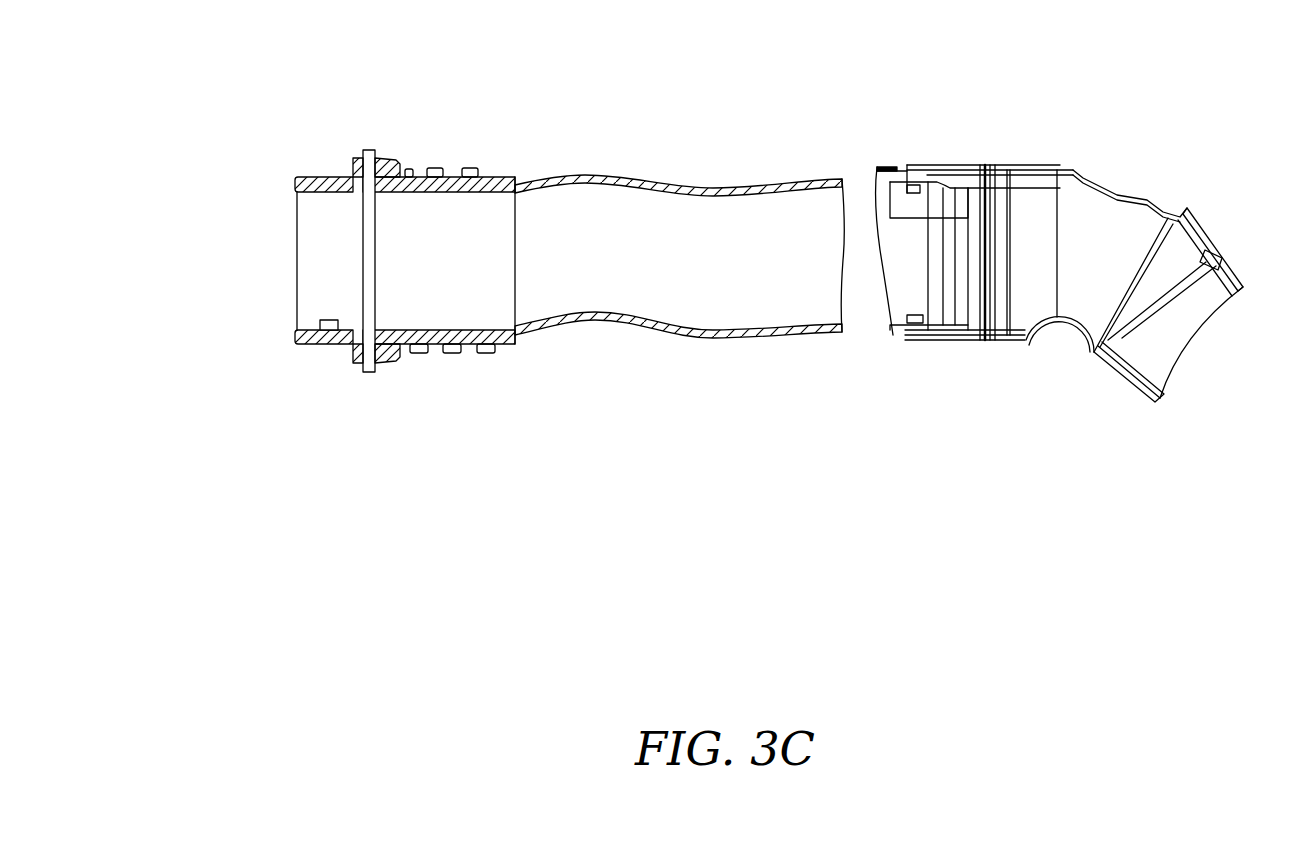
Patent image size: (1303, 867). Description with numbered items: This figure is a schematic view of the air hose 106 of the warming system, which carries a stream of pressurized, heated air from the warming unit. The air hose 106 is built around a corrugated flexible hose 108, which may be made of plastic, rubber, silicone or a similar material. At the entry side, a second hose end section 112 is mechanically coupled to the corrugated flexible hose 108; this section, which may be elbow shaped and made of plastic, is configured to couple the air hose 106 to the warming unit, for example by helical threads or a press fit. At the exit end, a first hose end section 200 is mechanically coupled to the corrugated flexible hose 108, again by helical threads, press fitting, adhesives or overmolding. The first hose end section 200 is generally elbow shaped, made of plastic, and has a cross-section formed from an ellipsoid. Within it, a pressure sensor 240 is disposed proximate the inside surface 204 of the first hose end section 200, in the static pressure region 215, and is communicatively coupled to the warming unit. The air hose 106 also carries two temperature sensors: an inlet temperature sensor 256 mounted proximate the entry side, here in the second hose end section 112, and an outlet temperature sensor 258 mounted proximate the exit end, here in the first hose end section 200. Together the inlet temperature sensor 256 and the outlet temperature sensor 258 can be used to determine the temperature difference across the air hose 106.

The air hose 106 is at (783, 376).
The corrugated flexible hose 108 is at (627, 333).
The second hose end section 112 is at (266, 183).
The first hose end section 200 is at (1134, 165).
The inside surface 204 is at (1038, 192).
The static pressure region 215 is at (943, 199).
The pressure sensor 240 is at (903, 178).
The inlet temperature sensor 256 is at (330, 331).
The outlet temperature sensor 258 is at (915, 340).